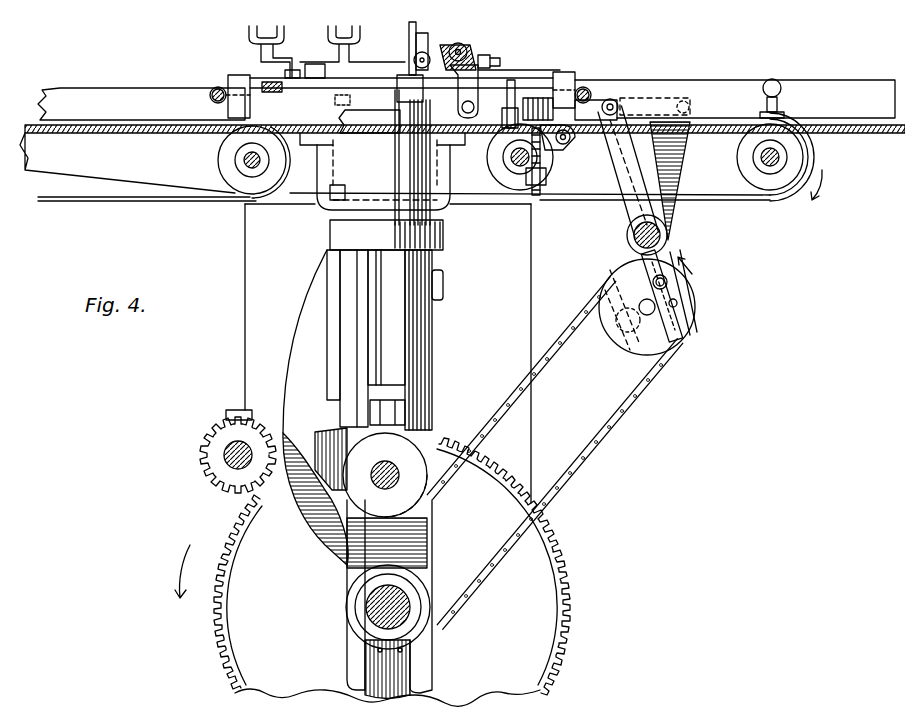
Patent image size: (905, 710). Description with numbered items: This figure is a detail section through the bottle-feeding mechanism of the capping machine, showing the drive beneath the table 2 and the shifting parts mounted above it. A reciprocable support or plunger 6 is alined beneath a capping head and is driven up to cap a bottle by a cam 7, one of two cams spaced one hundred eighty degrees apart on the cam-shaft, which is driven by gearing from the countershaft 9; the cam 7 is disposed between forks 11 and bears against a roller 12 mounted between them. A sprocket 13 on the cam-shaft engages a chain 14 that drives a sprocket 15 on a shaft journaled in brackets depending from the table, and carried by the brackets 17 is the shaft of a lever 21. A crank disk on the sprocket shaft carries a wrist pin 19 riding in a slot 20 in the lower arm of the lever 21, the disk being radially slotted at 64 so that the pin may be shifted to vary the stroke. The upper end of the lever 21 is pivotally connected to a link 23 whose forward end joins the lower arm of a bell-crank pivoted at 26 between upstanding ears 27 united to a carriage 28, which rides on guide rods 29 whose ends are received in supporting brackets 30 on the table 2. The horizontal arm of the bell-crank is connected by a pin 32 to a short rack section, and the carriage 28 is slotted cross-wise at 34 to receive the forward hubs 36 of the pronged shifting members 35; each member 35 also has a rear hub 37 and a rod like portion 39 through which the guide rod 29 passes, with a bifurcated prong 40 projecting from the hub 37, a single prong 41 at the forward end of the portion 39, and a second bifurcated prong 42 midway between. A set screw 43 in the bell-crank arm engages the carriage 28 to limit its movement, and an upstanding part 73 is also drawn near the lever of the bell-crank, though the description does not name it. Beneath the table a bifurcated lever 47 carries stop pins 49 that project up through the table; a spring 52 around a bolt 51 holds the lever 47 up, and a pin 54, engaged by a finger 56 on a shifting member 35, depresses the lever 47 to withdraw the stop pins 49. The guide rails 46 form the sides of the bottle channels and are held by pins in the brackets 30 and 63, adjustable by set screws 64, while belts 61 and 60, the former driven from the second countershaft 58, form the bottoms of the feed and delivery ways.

The table 2 is at (163, 135).
The reciprocable support or plunger 6 is at (330, 150).
The cam 7 is at (345, 557).
The countershaft 9 is at (386, 462).
The fork 11 is at (345, 655).
The roller 12 is at (420, 498).
The sprocket 13 is at (432, 593).
The chain 14 is at (498, 556).
The sprocket 15 is at (622, 355).
The bracket 17 is at (618, 190).
The wrist pin or stud 19 is at (653, 282).
The slot 20 is at (690, 306).
The lever 21 is at (670, 222).
The link 23 is at (607, 100).
The pivot 26 is at (466, 55).
The upstanding ear 27 is at (464, 46).
The carriage 28 is at (400, 80).
The guide rod 29 is at (533, 78).
The supporting bracket 30 is at (236, 78).
The pin 32 is at (428, 55).
The cross-wise slot 34 is at (394, 122).
The pronged shifting member 35 is at (294, 70).
The forward hub 36 is at (395, 112).
The rear hub 37 is at (272, 92).
The rod like portion 39 is at (322, 66).
The bifurcated prong 40 is at (266, 32).
The single prong 41 is at (424, 33).
The second bifurcated prong 42 is at (352, 31).
The set screw 43 is at (495, 72).
The guide rail 46 is at (152, 96).
The bifurcated lever 47 is at (502, 172).
The stud or pin 49 is at (420, 140).
The bolt 51 is at (546, 160).
The spring 52 is at (571, 139).
The pin 54 is at (512, 80).
The finger 56 is at (492, 62).
The second countershaft 58 is at (761, 157).
The feeder belt 60 is at (142, 202).
The feeder belt 61 is at (738, 196).
The bracket 63 is at (772, 79).
The set screw 64 is at (759, 258).
The lever 73 is at (410, 30).